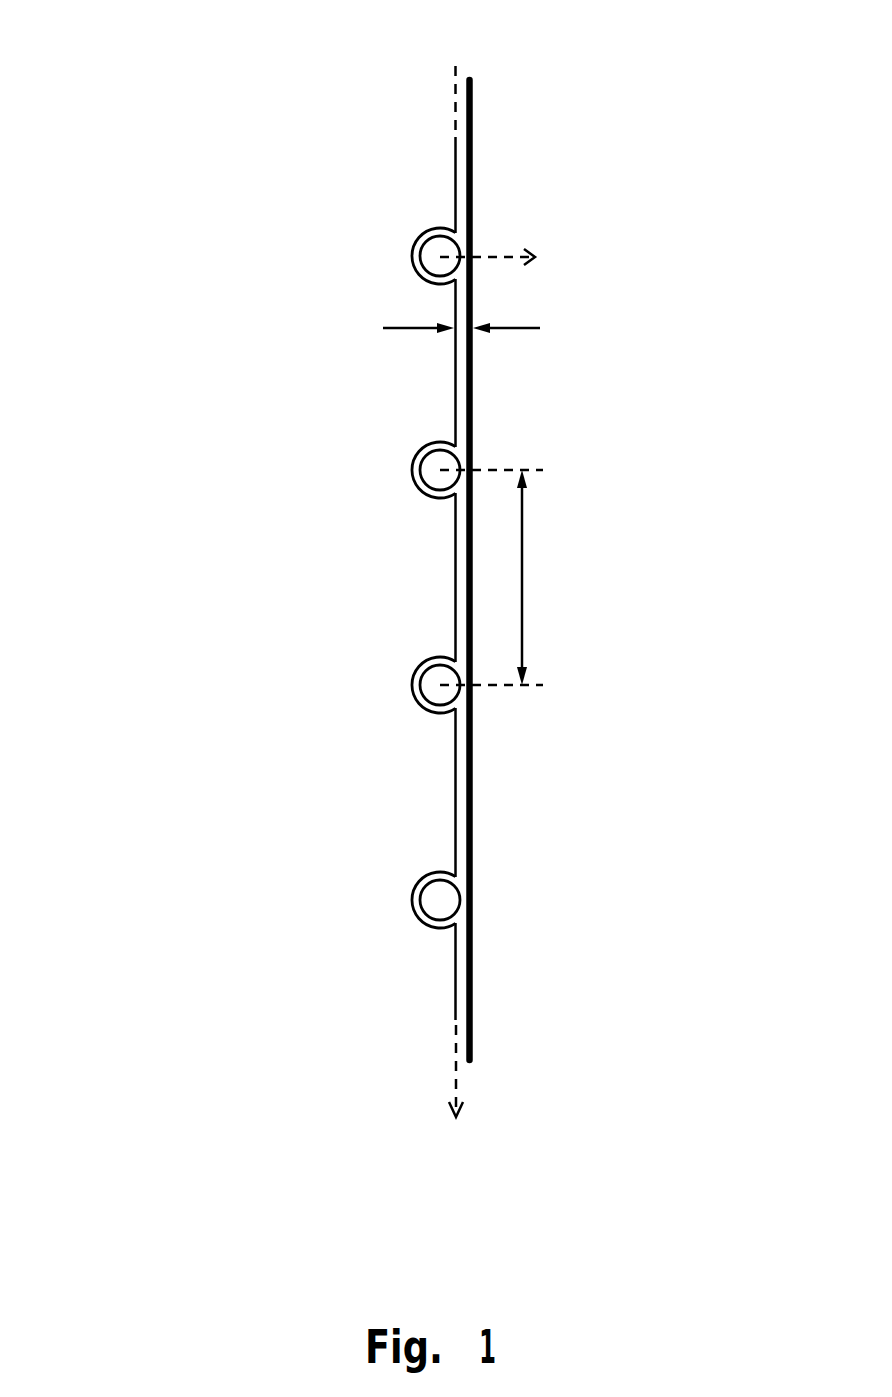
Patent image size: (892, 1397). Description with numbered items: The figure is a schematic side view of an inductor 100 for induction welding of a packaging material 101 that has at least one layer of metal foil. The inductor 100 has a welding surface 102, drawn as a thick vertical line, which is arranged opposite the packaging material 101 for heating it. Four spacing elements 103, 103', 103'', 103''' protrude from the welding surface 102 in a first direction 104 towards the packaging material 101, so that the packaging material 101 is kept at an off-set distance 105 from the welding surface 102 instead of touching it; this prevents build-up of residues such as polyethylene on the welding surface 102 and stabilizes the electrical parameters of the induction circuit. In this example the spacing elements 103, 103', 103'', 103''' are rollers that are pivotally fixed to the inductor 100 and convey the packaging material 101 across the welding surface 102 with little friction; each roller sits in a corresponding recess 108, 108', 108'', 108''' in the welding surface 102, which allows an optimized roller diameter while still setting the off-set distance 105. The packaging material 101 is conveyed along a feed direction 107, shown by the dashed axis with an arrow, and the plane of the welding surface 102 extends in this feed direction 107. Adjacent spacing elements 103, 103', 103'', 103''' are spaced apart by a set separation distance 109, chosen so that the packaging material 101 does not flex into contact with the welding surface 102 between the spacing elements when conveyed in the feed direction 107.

The inductor 100 is at (160, 34).
The packaging material 101 is at (472, 163).
The welding surface 102 is at (455, 377).
The spacing element 103 is at (383, 232).
The spacing element 103' is at (379, 445).
The spacing element 103'' is at (374, 660).
The spacing element 103''' is at (371, 874).
The first direction 104 is at (493, 255).
The off-set distance 105 is at (397, 330).
The feed direction 107 is at (456, 1083).
The recess 108 is at (385, 251).
The recess 108' is at (381, 464).
The recess 108'' is at (376, 679).
The recess 108''' is at (373, 893).
The separation distance 109 is at (506, 577).